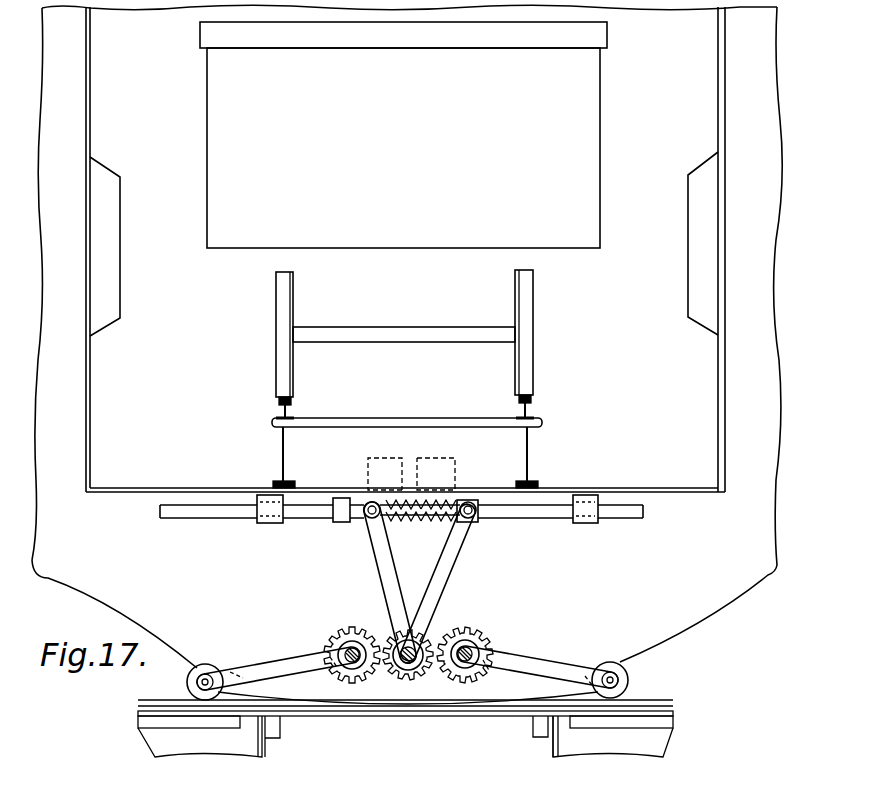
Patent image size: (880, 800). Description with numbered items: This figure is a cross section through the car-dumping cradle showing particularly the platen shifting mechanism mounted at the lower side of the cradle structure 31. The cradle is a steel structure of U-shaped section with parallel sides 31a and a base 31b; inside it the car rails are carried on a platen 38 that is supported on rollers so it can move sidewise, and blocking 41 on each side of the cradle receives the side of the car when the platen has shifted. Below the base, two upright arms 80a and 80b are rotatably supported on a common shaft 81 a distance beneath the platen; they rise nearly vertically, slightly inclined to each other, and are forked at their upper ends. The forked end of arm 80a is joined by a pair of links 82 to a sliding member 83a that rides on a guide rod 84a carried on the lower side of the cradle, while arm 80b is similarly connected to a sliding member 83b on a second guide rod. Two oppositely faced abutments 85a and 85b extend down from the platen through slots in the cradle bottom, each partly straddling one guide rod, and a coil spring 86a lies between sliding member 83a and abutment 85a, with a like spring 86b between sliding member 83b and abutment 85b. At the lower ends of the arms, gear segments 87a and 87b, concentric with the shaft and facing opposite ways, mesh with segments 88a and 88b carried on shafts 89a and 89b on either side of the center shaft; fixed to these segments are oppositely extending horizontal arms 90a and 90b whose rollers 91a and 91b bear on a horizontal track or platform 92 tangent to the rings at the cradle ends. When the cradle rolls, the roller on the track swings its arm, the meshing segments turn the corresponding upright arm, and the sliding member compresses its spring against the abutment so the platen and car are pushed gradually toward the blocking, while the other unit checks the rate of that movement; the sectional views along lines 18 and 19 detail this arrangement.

The section line 18— 18 is at (476, 418).
The section line 19— 19 is at (395, 612).
The cradle structure 31 is at (50, 578).
The side of the cradle 31a is at (92, 107).
The base of the cradle 31b is at (140, 484).
The platen 38 is at (340, 420).
The blocking 41 is at (118, 258).
The arm 80a is at (378, 563).
The arm 80b is at (437, 573).
The shaft 81 is at (405, 691).
The links 82 is at (410, 512).
The sliding member 83a is at (470, 523).
The sliding member 83b is at (342, 523).
The guide rod 84a is at (566, 519).
The abutment 85a is at (368, 460).
The abutment 85b is at (454, 471).
The coil spring 86a is at (435, 502).
The coil spring 86b is at (367, 503).
The gear segment 87a is at (388, 678).
The gear segment 87b is at (452, 686).
The segment 88a is at (346, 631).
The segment 88b is at (460, 630).
The shaft 89a is at (348, 662).
The shaft 89b is at (464, 661).
The arm 90a is at (278, 650).
The arm 90b is at (553, 648).
The roller 91a is at (209, 670).
The roller 91b is at (622, 664).
The track or platform 92 is at (652, 700).